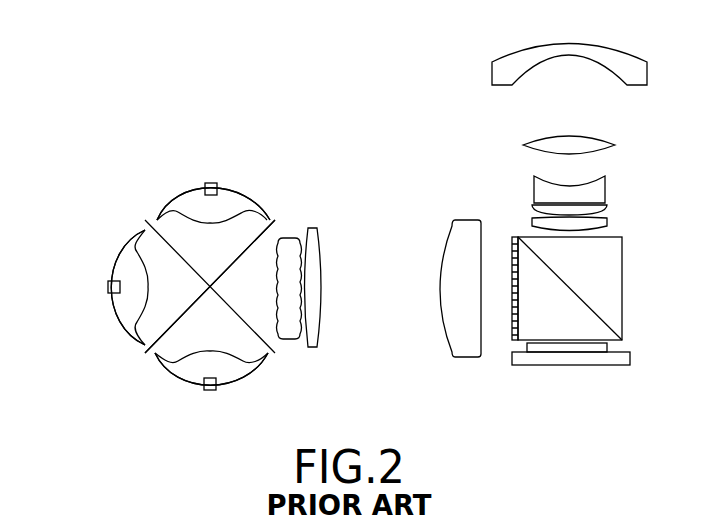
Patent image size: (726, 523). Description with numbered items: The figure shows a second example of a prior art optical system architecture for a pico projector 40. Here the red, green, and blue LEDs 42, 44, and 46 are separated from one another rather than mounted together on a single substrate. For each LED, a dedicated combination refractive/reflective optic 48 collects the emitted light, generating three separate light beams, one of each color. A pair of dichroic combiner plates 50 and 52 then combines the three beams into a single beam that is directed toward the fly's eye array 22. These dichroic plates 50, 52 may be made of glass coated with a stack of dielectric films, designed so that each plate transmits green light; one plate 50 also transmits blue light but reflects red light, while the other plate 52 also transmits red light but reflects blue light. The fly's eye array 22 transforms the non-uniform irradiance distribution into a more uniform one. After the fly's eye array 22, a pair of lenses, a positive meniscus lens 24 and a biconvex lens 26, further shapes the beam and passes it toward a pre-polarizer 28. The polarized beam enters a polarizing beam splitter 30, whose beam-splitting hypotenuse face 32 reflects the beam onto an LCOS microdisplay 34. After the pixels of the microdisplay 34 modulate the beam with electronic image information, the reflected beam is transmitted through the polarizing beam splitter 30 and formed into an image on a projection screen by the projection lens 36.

The pico projector 40 is at (116, 92).
The dichroic combiner plate 50 is at (158, 218).
The dichroic combiner plate 52 is at (262, 237).
The red LED 42 is at (210, 186).
The green LED 44 is at (108, 287).
The blue LED 46 is at (209, 391).
The combination refractive/reflective optic 48 is at (235, 200).
The fly's eye double microlens array 22 is at (287, 341).
The positive meniscus lens 24 is at (313, 310).
The biconvex lens 26 is at (453, 333).
The pre-polarizer 28 is at (517, 238).
The polarizing beam splitter 30 is at (610, 277).
The beam-splitting hypotenuse face 32 is at (597, 313).
The LCOS microdisplay 34 is at (603, 347).
The projection lens 36 is at (658, 64).